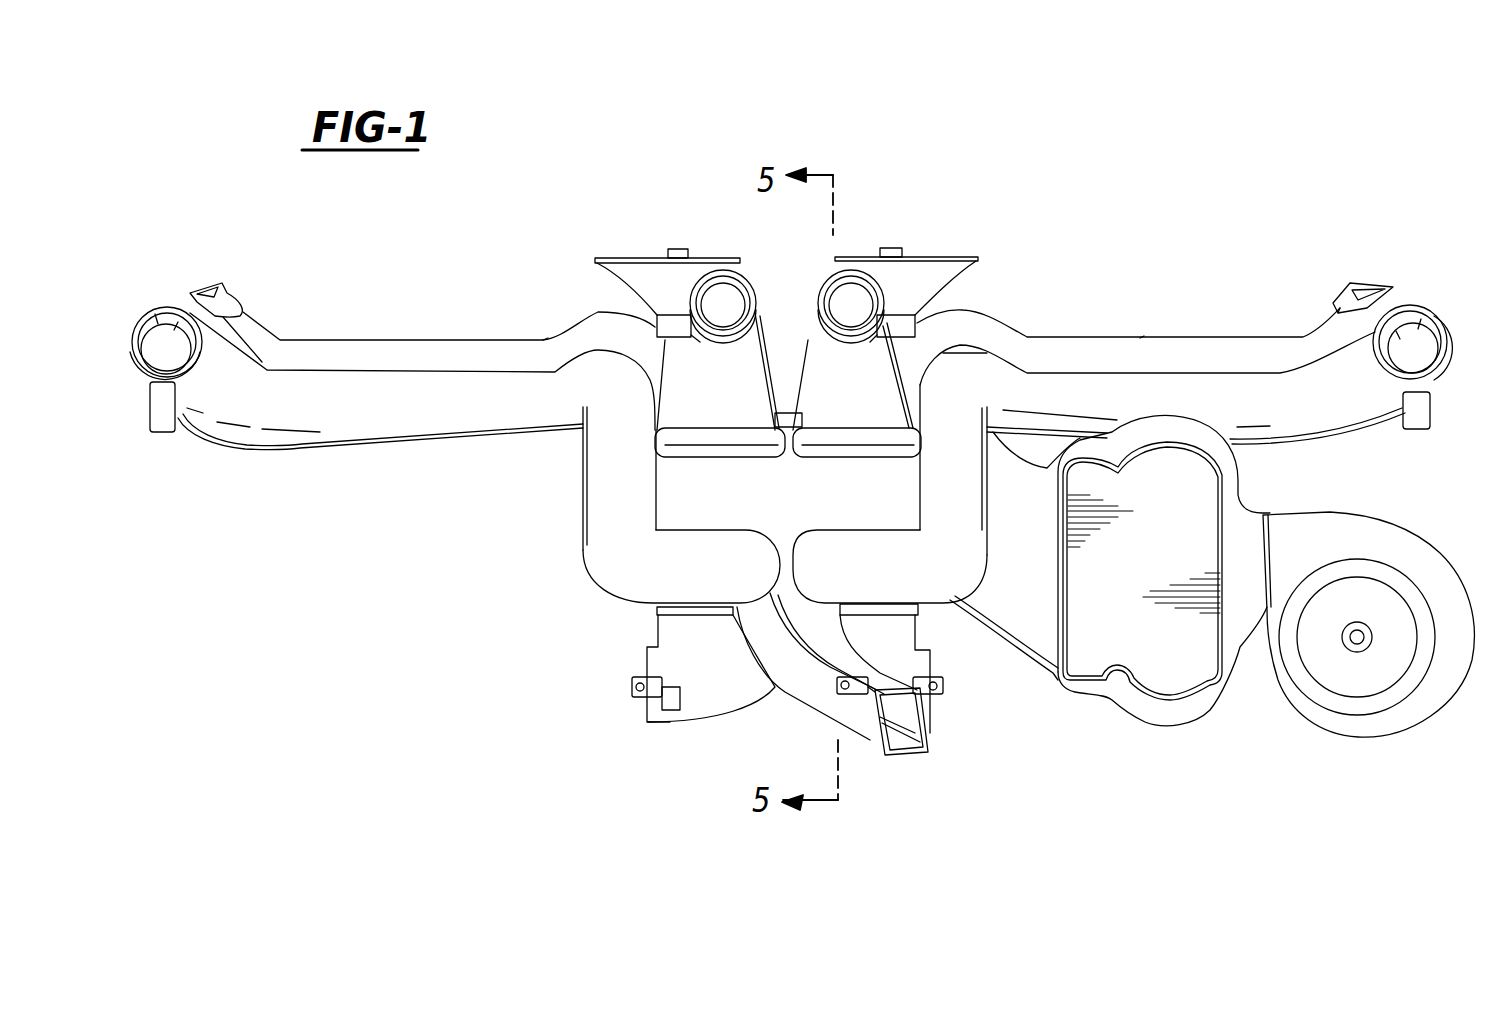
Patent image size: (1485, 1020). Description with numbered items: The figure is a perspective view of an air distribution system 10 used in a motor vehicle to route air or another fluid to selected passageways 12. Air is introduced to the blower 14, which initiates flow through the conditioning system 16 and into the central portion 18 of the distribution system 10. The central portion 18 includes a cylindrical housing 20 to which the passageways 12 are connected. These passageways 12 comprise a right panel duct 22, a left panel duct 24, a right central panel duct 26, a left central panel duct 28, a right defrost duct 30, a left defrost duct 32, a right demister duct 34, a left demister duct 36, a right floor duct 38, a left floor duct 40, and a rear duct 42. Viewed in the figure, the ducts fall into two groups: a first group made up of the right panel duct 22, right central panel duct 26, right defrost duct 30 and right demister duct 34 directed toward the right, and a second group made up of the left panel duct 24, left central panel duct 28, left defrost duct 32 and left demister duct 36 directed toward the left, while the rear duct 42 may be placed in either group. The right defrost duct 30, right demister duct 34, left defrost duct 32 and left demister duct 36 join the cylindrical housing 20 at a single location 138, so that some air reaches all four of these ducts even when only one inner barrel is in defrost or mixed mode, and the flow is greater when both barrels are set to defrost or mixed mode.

The air distribution system 10 is at (882, 195).
The passageways 12 is at (540, 325).
The blower 14 is at (1302, 718).
The conditioning system 16 is at (1110, 706).
The central portion 18 is at (650, 608).
The cylindrical housing 20 is at (663, 500).
The right panel duct 22 is at (1350, 430).
The left panel duct 24 is at (325, 427).
The right central panel duct 26 is at (866, 415).
The left central panel duct 28 is at (730, 415).
The right defrost duct 30 is at (925, 263).
The left defrost duct 32 is at (652, 262).
The right demister duct 34 is at (1227, 345).
The left demister duct 36 is at (325, 345).
The right floor duct 38 is at (905, 640).
The left floor duct 40 is at (697, 710).
The rear duct 42 is at (870, 737).
The single location 138 is at (790, 410).